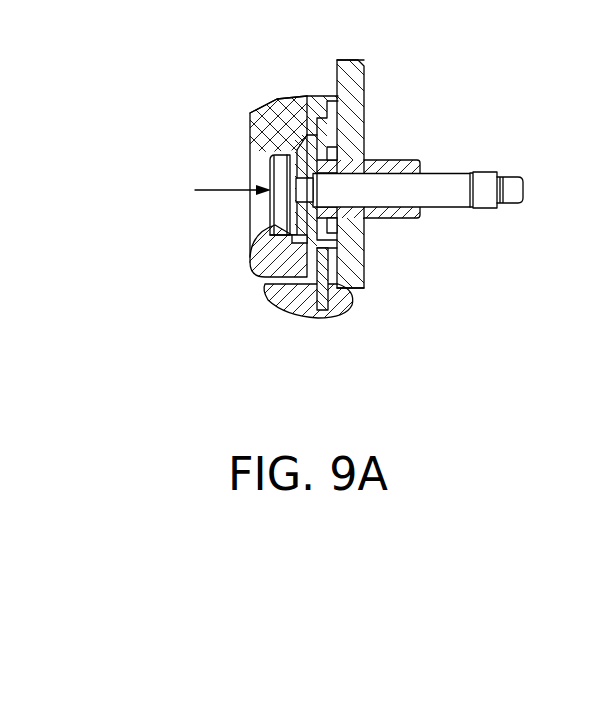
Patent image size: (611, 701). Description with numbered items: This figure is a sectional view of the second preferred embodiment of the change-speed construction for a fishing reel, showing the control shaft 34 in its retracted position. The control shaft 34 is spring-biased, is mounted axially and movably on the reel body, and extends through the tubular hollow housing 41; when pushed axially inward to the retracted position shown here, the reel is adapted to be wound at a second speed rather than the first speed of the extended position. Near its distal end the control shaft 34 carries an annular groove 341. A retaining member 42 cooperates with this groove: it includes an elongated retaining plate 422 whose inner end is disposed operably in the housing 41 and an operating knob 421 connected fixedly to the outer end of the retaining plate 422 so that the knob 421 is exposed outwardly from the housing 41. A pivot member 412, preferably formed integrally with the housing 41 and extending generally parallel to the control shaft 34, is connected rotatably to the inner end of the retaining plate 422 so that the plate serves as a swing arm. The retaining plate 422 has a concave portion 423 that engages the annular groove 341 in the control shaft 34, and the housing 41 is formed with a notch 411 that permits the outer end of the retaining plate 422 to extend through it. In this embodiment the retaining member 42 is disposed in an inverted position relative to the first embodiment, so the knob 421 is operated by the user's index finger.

The control shaft 34 is at (273, 156).
The annular groove 341 is at (288, 225).
The tubular hollow housing 41 is at (293, 108).
The notch 411 is at (342, 268).
The pivot member 412 is at (322, 122).
The retaining member 42 is at (330, 313).
The operating knob 421 is at (294, 294).
The retaining plate 422 is at (280, 120).
The concave portion 423 is at (292, 238).